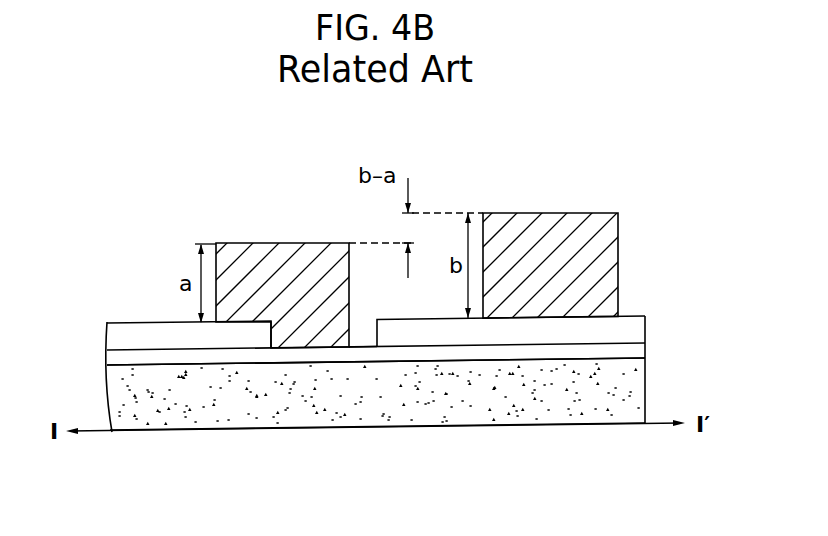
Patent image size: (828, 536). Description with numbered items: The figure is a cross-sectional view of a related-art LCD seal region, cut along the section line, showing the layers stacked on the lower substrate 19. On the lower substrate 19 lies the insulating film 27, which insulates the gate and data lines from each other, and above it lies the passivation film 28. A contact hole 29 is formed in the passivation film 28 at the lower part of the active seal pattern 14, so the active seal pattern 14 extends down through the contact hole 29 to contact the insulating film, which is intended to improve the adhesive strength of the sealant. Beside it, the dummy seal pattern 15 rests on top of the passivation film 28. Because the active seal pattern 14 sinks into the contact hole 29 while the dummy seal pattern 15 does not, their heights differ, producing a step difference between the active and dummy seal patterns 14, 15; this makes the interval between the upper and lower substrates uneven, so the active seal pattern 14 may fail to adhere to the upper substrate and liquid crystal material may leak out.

The active seal pattern 14 is at (318, 247).
The dummy seal pattern 15 is at (588, 216).
The lower substrate 19 is at (640, 393).
The insulating film 27 is at (640, 352).
The passivation film 28 is at (640, 326).
The contact hole 29 is at (363, 337).